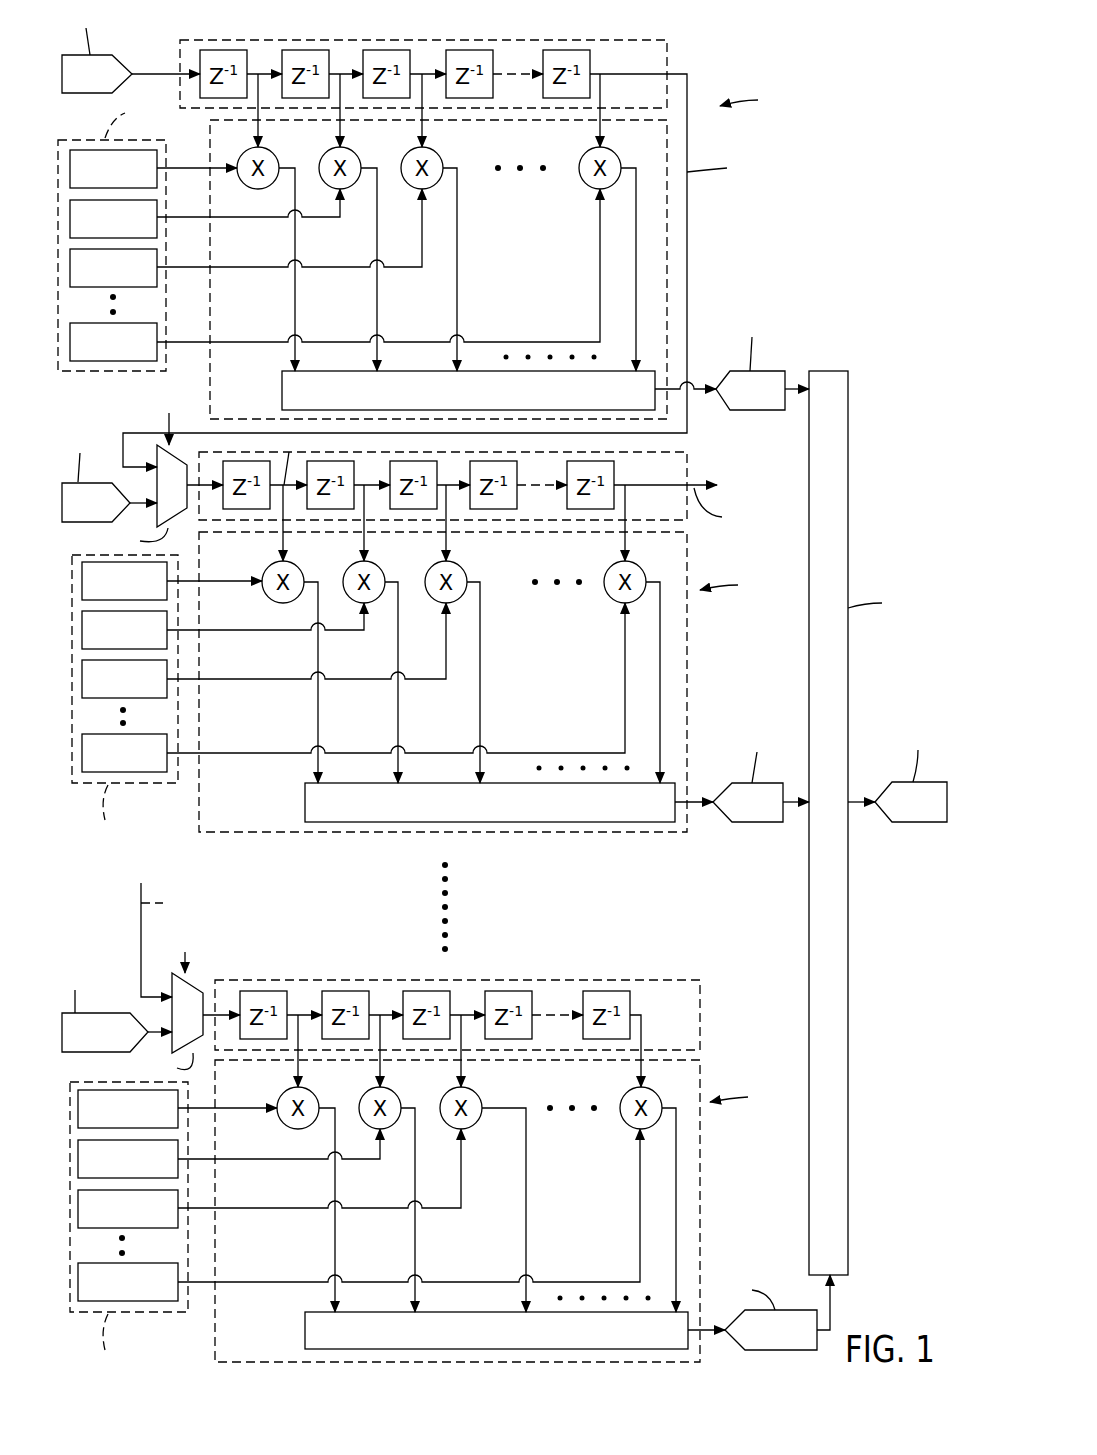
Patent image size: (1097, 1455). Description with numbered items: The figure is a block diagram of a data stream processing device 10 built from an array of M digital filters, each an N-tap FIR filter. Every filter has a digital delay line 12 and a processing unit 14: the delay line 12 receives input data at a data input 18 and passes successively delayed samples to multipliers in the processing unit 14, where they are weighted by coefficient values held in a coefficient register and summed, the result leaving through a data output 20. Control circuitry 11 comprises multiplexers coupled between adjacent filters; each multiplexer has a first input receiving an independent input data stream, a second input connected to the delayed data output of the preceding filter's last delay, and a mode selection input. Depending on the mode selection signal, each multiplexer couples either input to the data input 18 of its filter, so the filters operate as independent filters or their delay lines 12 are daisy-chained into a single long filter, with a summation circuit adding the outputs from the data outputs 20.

The data stream processing device 10 is at (825, 58).
The control circuitry 11 is at (105, 428).
The digital delay line 12 is at (630, 40).
The processing unit 14 is at (667, 258).
The data input 18 is at (178, 72).
The data output 20 is at (668, 393).